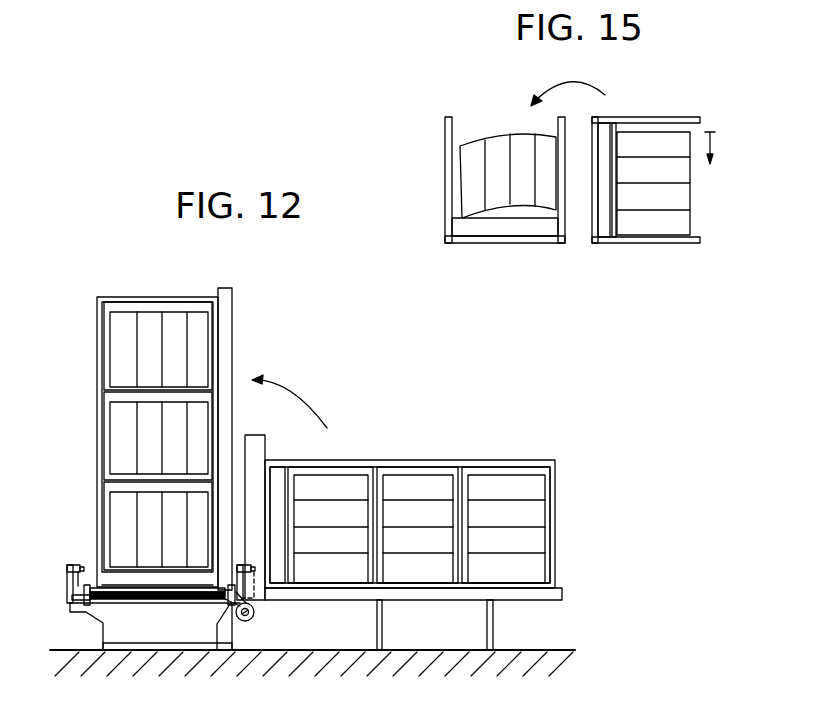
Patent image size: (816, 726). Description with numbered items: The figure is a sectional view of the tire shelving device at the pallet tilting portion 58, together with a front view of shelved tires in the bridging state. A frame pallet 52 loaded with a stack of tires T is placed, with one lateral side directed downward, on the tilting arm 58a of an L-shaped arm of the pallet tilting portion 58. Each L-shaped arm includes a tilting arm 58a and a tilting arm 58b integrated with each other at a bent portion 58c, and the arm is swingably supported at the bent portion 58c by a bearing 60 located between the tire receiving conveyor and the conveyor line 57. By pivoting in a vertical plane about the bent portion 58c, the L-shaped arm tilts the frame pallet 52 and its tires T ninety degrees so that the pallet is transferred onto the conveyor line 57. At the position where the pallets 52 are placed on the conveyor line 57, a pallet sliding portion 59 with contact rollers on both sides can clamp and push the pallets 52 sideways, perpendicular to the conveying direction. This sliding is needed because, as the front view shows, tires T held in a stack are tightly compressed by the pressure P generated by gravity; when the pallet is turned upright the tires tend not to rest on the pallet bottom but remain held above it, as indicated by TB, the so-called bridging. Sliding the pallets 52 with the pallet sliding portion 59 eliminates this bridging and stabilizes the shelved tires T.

In FIG. 12, the frame pallet 52 is at (156, 296).
In FIG. 12, the conveyor line 57 is at (106, 632).
In FIG. 12, the pallet tilting portion 58 is at (366, 439).
In FIG. 12, the tilting arm 58a is at (233, 357).
In FIG. 12, the tilting arm 58b is at (83, 616).
In FIG. 12, the bent portion 58c is at (258, 603).
In FIG. 12, the pallet sliding portion 59 is at (58, 560).
In FIG. 12, the bearing 60 is at (250, 634).
In FIG. 12, the tire T is at (322, 472).
In FIG. 15, the tire T is at (692, 198).
In FIG. 15, the bridged tire position TB is at (523, 212).
In FIG. 15, the pressure P is at (712, 142).